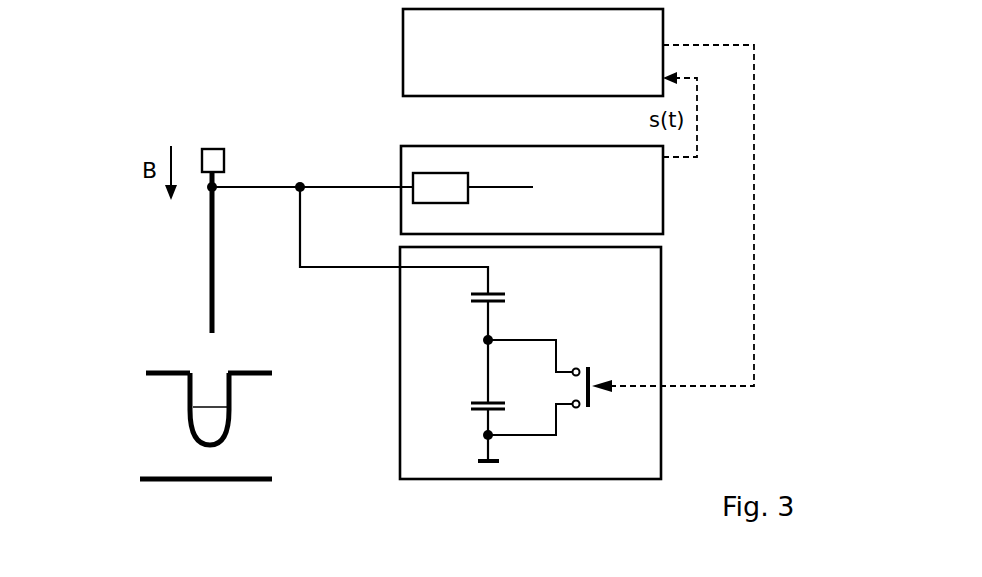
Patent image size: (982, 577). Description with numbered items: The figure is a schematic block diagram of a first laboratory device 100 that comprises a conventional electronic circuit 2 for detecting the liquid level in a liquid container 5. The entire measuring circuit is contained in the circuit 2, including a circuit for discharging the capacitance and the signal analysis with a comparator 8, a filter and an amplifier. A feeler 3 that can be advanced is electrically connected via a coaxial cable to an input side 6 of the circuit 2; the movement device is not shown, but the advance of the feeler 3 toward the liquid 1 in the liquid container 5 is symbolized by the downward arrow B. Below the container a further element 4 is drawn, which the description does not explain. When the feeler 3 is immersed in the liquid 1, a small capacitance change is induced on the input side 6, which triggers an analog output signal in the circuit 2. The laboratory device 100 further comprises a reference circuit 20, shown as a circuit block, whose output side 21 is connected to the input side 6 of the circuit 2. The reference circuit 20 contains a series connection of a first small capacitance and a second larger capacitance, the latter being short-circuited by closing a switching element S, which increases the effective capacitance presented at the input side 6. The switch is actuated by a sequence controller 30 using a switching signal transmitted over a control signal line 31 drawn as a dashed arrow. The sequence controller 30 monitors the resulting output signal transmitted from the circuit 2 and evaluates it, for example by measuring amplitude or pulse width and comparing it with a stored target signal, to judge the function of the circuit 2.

The laboratory device 100 is at (93, 102).
The feeler 3 is at (212, 212).
The liquid container 5 is at (188, 391).
The liquid 1 is at (215, 414).
The counter electrode plate 4 is at (140, 480).
The input side 6 is at (375, 178).
The comparator 8 is at (450, 173).
The electronic circuit 2 is at (650, 168).
The sequence controller 30 is at (650, 17).
The control signal line 31 is at (754, 85).
The reference circuit 20 is at (642, 272).
The output side 21 is at (388, 280).